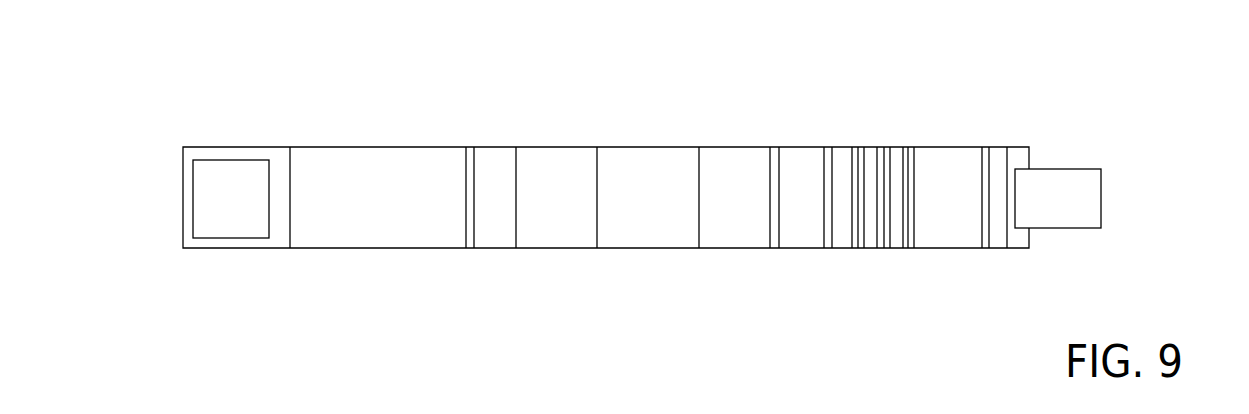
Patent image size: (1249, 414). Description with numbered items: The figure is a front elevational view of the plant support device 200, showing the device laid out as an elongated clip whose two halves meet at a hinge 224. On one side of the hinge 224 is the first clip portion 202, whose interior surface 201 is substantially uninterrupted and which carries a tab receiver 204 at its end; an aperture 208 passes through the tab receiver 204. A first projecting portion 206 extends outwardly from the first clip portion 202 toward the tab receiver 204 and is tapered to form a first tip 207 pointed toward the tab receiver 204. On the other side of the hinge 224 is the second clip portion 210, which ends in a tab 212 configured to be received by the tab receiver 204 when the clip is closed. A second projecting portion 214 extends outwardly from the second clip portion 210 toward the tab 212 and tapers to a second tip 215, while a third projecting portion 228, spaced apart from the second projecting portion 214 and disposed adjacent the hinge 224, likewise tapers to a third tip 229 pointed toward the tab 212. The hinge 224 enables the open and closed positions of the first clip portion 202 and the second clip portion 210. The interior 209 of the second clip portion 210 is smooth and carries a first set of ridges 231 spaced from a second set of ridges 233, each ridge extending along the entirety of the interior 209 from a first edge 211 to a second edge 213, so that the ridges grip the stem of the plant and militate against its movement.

The plant support device 200 is at (130, 65).
The interior surface 201 is at (412, 226).
The first clip portion 202 is at (368, 187).
The tab receiver 204 is at (203, 155).
The first projecting portion 206 is at (499, 228).
The first tip 207 is at (470, 167).
The aperture 208 is at (231, 240).
The interior 209 is at (958, 224).
The second clip portion 210 is at (963, 178).
The first edge 211 is at (840, 249).
The tab 212 is at (1078, 187).
The second edge 213 is at (842, 150).
The second projecting portion 214 is at (804, 210).
The second tip 215 is at (826, 163).
The hinge 224 is at (659, 186).
The third projecting portion 228 is at (738, 229).
The third tip 229 is at (773, 163).
The first set of ridges 231 is at (998, 160).
The second set of ridges 233 is at (902, 249).